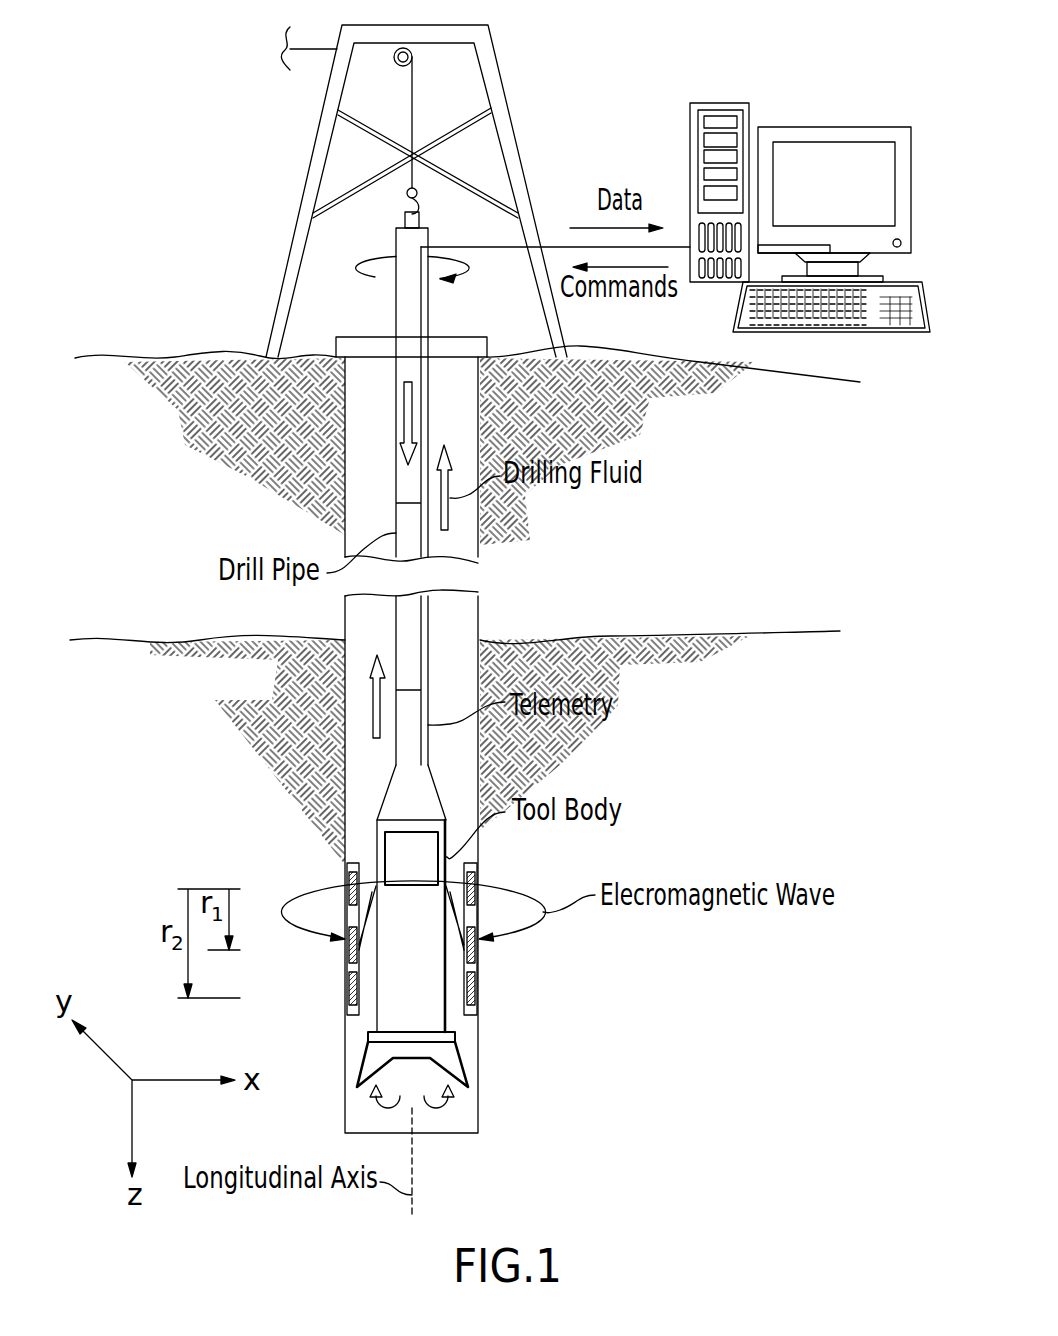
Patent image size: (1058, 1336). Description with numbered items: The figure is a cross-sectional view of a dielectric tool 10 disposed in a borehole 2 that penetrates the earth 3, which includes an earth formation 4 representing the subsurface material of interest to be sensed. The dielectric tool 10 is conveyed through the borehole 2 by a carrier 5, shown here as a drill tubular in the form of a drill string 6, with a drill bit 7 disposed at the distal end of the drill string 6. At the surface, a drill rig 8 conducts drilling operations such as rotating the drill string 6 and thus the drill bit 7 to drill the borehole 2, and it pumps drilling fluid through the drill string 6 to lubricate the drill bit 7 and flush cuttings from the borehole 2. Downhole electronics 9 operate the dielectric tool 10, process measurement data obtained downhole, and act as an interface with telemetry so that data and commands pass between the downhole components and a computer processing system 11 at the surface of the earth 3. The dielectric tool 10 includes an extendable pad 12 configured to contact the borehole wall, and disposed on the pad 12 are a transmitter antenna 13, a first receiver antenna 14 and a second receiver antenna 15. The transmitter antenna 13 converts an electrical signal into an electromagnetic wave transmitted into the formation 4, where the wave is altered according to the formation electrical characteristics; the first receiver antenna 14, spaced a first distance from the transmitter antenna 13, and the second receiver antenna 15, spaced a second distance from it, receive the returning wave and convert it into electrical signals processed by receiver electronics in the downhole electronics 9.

The borehole 2 is at (365, 508).
The earth 3 is at (170, 414).
The earth formation 4 is at (267, 691).
The carrier 5 is at (396, 633).
The drill string 6 is at (396, 477).
The drill bit 7 is at (373, 1058).
The drill rig 8 is at (236, 231).
The downhole electronics 9 is at (393, 857).
The dielectric tool 10 is at (377, 829).
The computer processing system 11 is at (720, 103).
The extendable pad 12 is at (477, 1015).
The transmitter antenna 13 is at (473, 880).
The first receiver antenna 14 is at (476, 955).
The second receiver antenna 15 is at (477, 990).